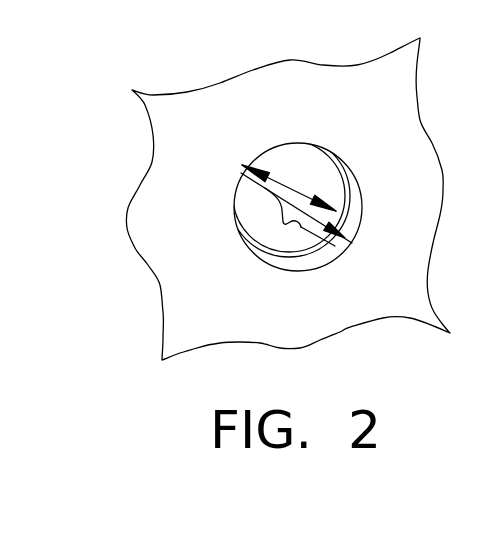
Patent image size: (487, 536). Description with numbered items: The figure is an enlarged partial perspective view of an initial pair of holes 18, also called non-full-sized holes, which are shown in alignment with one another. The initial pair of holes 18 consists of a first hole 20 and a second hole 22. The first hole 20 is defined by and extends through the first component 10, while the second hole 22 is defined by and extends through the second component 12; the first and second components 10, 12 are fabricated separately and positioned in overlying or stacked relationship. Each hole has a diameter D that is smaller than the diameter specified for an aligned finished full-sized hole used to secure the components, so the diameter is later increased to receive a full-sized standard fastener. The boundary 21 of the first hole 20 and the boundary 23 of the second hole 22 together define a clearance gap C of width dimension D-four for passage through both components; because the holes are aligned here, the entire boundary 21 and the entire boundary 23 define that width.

The first component 10 is at (227, 318).
The second component 12 is at (233, 207).
The initial pair of holes 18 is at (363, 141).
The first hole 20 is at (343, 270).
The boundary 21 is at (357, 205).
The second hole 22 is at (314, 199).
The boundary 23 is at (338, 158).